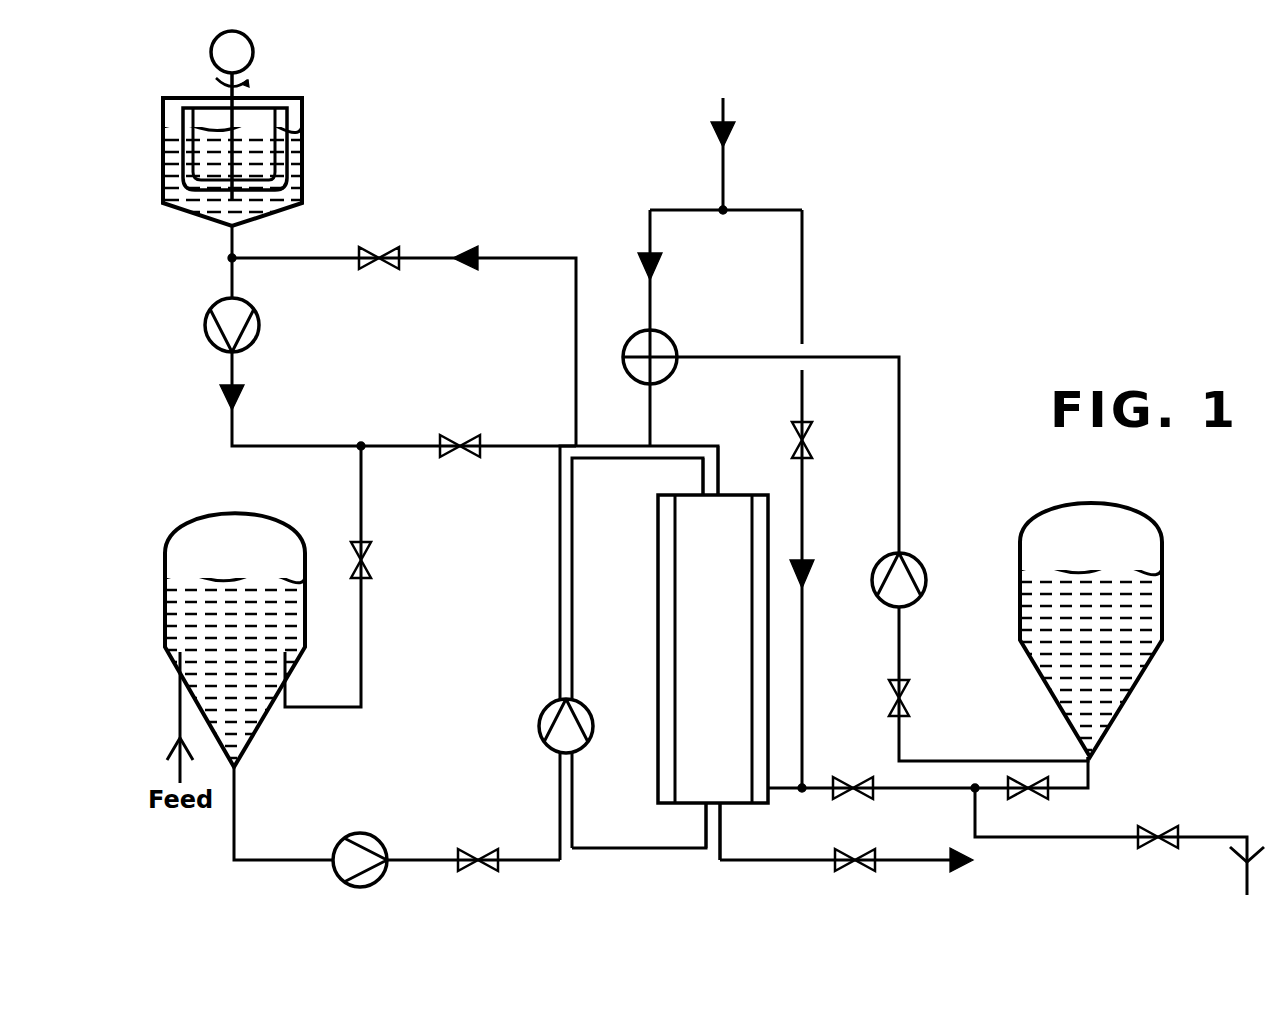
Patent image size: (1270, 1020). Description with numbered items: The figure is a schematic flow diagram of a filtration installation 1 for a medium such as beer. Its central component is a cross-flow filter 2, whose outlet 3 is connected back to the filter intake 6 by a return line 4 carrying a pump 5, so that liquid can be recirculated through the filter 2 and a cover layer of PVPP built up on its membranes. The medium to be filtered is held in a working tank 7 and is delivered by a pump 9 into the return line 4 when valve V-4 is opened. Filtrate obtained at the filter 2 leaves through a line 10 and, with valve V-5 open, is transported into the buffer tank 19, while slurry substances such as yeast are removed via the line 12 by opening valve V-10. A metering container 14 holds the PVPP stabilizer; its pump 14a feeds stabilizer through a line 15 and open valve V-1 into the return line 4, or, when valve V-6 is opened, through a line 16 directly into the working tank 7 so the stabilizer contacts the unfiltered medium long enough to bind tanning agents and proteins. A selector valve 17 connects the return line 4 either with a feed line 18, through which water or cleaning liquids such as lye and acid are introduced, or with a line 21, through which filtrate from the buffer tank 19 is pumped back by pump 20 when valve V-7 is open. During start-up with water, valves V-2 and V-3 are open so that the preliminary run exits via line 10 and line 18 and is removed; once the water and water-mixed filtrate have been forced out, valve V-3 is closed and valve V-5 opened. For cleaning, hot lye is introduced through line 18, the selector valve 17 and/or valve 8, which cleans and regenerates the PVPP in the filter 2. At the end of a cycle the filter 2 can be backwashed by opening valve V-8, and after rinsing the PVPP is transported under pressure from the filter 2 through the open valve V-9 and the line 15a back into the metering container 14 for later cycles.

The filtration installation 1 is at (1040, 217).
The cross-flow filter 2 is at (722, 617).
The outlet 3 is at (698, 806).
The return line 4 is at (562, 645).
The pump 5 is at (548, 728).
The filter intake 6 is at (731, 494).
The working tank 7 is at (238, 619).
The valve 8 is at (288, 858).
The pump 9 is at (345, 850).
The line 10 is at (943, 791).
The line 12 is at (928, 858).
The metering container 14 is at (298, 150).
The pump 14a is at (256, 322).
The line 15 is at (283, 446).
The line 15a is at (518, 257).
The line 16 is at (363, 618).
The selector valve 17 is at (667, 350).
The feed line 18 is at (727, 99).
The buffer tank 19 is at (1104, 613).
The pump 20 is at (921, 590).
The line 21 is at (901, 402).
The valve V-1 is at (454, 441).
The valve V-2 is at (843, 784).
The valve V-3 is at (1165, 820).
The valve V-4 is at (476, 853).
The valve V-5 is at (1018, 796).
The valve V-6 is at (372, 556).
The valve V-7 is at (907, 701).
The valve V-8 is at (808, 446).
The valve V-9 is at (377, 253).
The valve V-10 is at (846, 853).